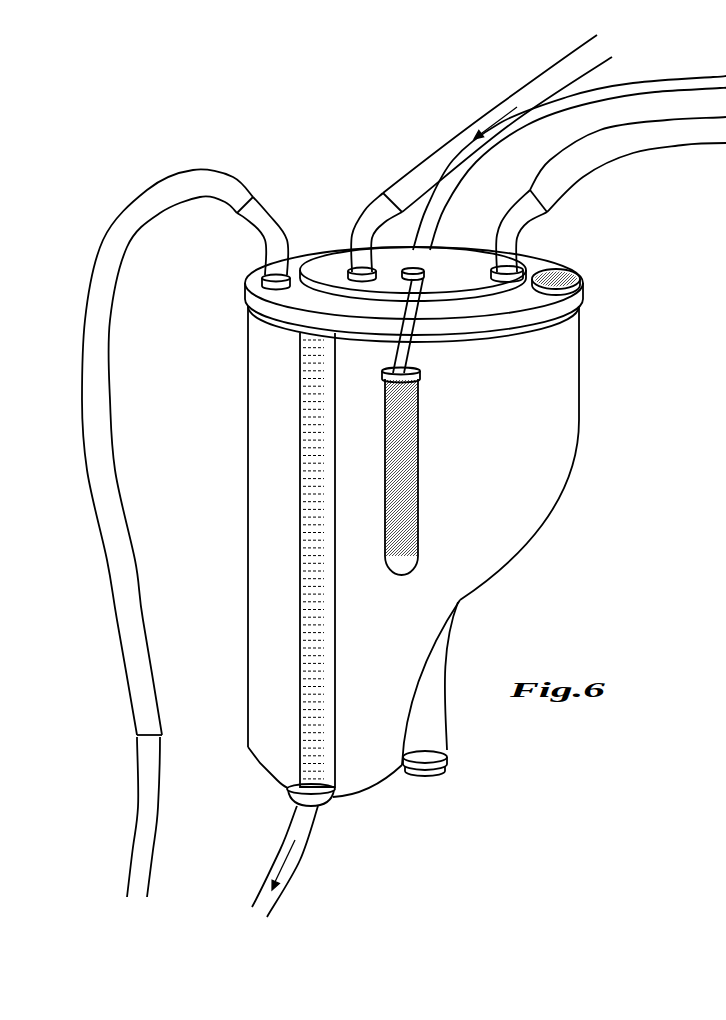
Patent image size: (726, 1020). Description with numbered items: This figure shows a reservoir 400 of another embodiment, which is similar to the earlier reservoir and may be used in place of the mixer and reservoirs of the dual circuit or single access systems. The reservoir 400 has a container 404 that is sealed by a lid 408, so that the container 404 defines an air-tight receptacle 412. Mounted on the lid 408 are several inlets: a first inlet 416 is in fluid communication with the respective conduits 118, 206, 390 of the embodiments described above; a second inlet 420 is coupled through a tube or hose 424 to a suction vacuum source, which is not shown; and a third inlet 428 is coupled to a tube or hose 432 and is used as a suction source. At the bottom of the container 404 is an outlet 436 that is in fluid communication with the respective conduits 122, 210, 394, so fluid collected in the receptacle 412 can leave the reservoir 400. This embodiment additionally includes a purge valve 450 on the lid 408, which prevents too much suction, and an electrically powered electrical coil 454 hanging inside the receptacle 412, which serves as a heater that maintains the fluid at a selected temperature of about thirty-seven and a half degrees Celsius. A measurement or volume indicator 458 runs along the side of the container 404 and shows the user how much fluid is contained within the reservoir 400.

The reservoir 400 is at (270, 128).
The conduit 118 is at (498, 123).
The conduit 206 is at (497, 123).
The conduit 390 is at (497, 123).
The tube or hose 432 is at (163, 185).
The third inlet 428 is at (290, 270).
The first inlet 416 is at (350, 270).
The lid 408 is at (253, 280).
The tube or hose 424 is at (610, 167).
The second inlet 420 is at (523, 262).
The purge valve 450 is at (567, 270).
The volume indicator 458 is at (307, 457).
The electrical coil 454 is at (415, 470).
The air-tight receptacle 412 is at (538, 445).
The container 404 is at (537, 527).
The outlet 436 is at (323, 803).
The conduit 122 is at (282, 870).
The conduit 210 is at (285, 861).
The conduit 394 is at (285, 861).